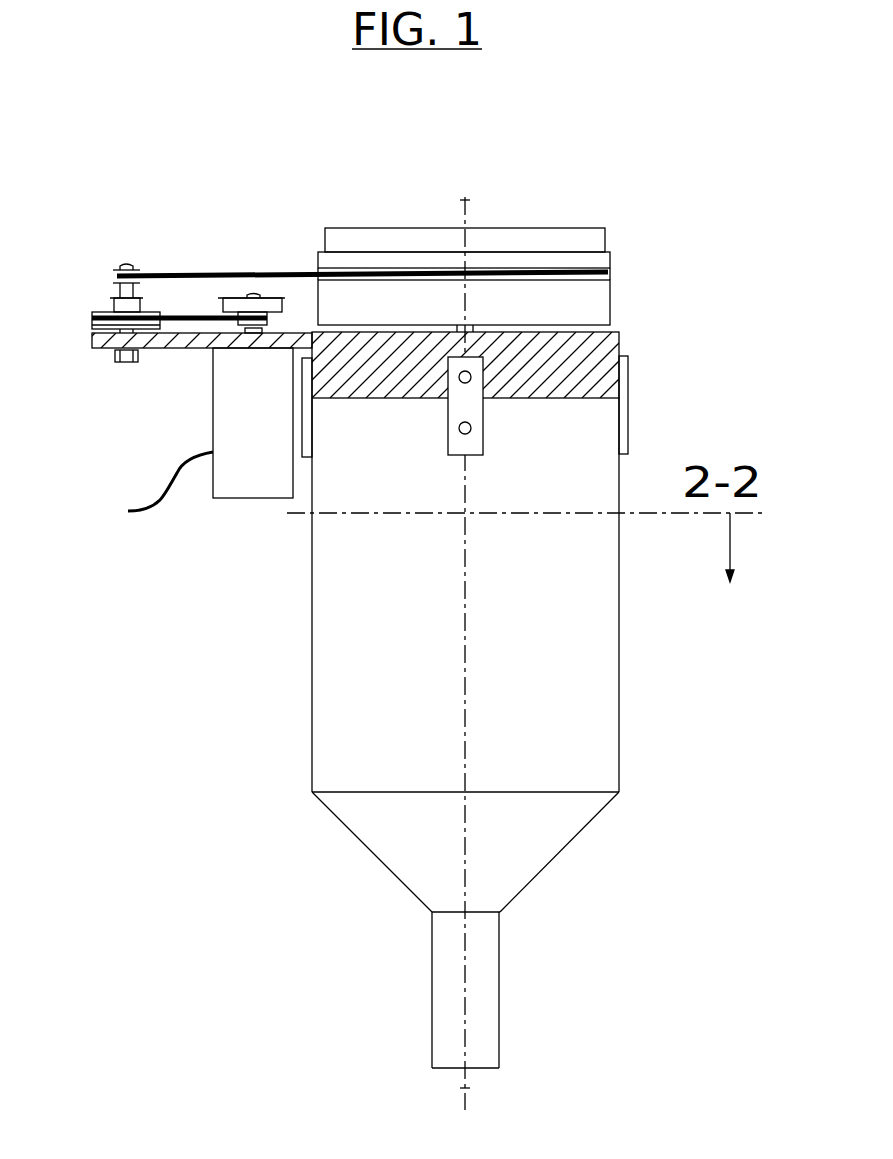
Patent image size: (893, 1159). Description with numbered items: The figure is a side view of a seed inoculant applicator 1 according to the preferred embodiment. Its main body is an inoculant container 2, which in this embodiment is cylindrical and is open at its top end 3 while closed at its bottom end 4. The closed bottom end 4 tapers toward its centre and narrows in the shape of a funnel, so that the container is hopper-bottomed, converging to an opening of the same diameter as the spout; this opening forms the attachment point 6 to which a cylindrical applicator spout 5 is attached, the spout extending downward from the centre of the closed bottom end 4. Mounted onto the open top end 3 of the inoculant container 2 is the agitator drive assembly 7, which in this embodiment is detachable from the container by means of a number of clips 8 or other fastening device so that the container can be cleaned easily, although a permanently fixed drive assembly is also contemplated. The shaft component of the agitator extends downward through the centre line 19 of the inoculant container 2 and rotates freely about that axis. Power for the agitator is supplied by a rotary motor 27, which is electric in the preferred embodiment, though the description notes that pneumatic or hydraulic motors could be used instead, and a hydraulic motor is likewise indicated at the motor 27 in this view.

The seed inoculant applicator 1 is at (294, 242).
The inoculant container 2 is at (332, 678).
The open top end 3 is at (570, 398).
The closed bottom end 4 is at (543, 865).
The applicator spout 5 is at (480, 1062).
The attachment point 6 is at (452, 913).
The agitator drive assembly 7 is at (600, 260).
The clips 8 is at (477, 407).
The centre line 19 is at (466, 208).
The rotary motor 27 is at (243, 498).